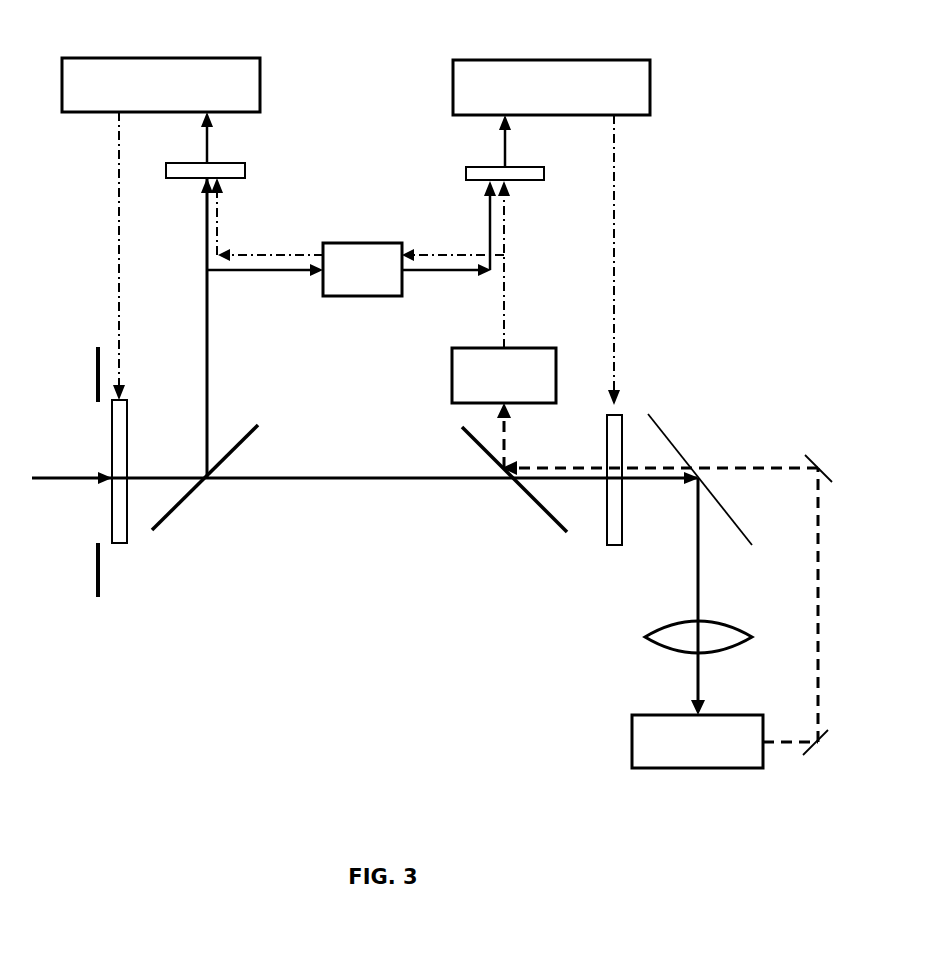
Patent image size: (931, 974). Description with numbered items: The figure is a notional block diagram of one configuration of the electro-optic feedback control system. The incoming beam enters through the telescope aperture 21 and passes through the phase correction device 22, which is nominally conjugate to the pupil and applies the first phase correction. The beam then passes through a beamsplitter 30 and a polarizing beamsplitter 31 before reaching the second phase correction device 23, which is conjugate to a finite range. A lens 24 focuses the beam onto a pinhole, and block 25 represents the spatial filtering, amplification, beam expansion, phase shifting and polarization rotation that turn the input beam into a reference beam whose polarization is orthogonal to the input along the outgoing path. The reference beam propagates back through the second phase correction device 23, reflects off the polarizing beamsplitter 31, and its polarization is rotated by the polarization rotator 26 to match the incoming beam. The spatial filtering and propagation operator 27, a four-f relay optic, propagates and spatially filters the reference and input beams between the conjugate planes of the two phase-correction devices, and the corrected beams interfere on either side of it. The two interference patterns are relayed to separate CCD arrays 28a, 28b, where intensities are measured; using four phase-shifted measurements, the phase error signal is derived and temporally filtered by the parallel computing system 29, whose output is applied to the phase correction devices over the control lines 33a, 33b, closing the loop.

The telescope aperture 21 is at (108, 603).
The phase correction device 22 is at (138, 554).
The second phase correction device 23 is at (597, 552).
The lens 24 is at (642, 655).
The block 25 is at (634, 777).
The polarization rotator 26 is at (436, 360).
The spatial filtering and propagation operator 27 is at (352, 233).
The CCD array 28a is at (258, 159).
The CCD array 28b is at (455, 160).
The parallel computing system 29 is at (140, 46).
The beamsplitter 30 is at (182, 523).
The polarizing beamsplitter 31 is at (542, 532).
The first control signal line 33a is at (106, 200).
The second control signal line 33b is at (632, 197).